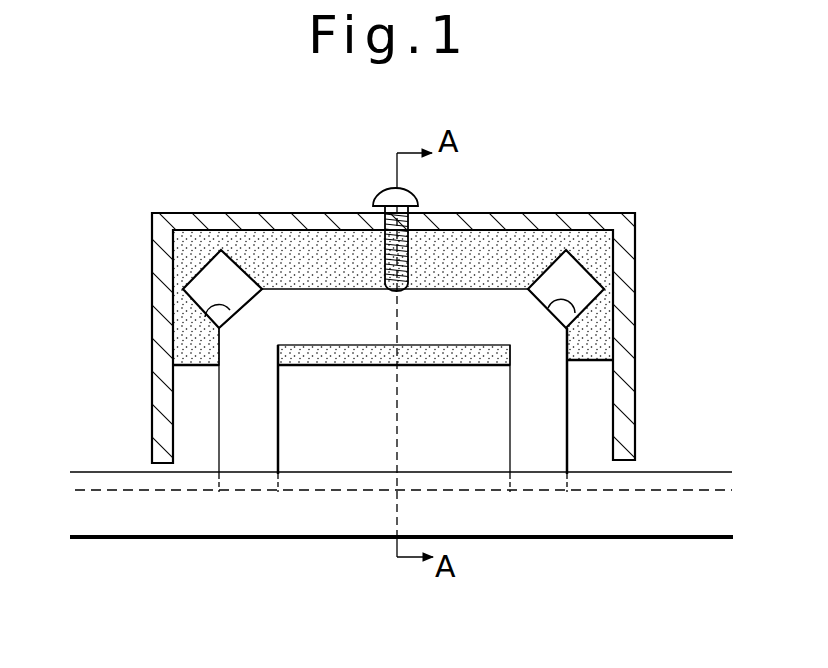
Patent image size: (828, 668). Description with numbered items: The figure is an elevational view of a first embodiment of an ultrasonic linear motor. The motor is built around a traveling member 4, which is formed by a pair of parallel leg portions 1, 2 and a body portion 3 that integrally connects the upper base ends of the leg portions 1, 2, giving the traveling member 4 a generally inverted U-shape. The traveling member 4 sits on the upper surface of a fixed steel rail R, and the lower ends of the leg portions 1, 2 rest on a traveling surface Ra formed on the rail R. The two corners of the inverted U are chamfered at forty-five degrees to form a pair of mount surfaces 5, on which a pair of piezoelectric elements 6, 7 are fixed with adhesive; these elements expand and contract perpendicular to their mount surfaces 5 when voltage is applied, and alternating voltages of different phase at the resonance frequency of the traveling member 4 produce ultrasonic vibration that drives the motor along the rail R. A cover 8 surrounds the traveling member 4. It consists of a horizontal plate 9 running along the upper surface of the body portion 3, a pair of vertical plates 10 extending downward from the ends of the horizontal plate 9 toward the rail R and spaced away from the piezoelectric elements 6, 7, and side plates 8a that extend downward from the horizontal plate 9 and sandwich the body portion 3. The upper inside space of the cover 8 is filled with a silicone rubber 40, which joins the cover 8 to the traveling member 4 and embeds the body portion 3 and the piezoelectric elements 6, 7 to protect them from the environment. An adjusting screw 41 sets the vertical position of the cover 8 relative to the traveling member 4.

The leg portion 1 is at (262, 456).
The leg portion 2 is at (528, 436).
The body portion 3 is at (312, 327).
The traveling member 4 is at (505, 388).
The mount surfaces 5 is at (207, 311).
The piezoelectric element 6 is at (203, 280).
The piezoelectric element 7 is at (577, 275).
The cover 8 is at (187, 208).
The side plates 8a is at (386, 366).
The horizontal plate 9 is at (508, 231).
The vertical plates 10 is at (162, 396).
The silicone rubber 40 is at (293, 248).
The adjusting screw 41 is at (410, 197).
The rail R is at (655, 517).
The traveling surface Ra is at (667, 490).